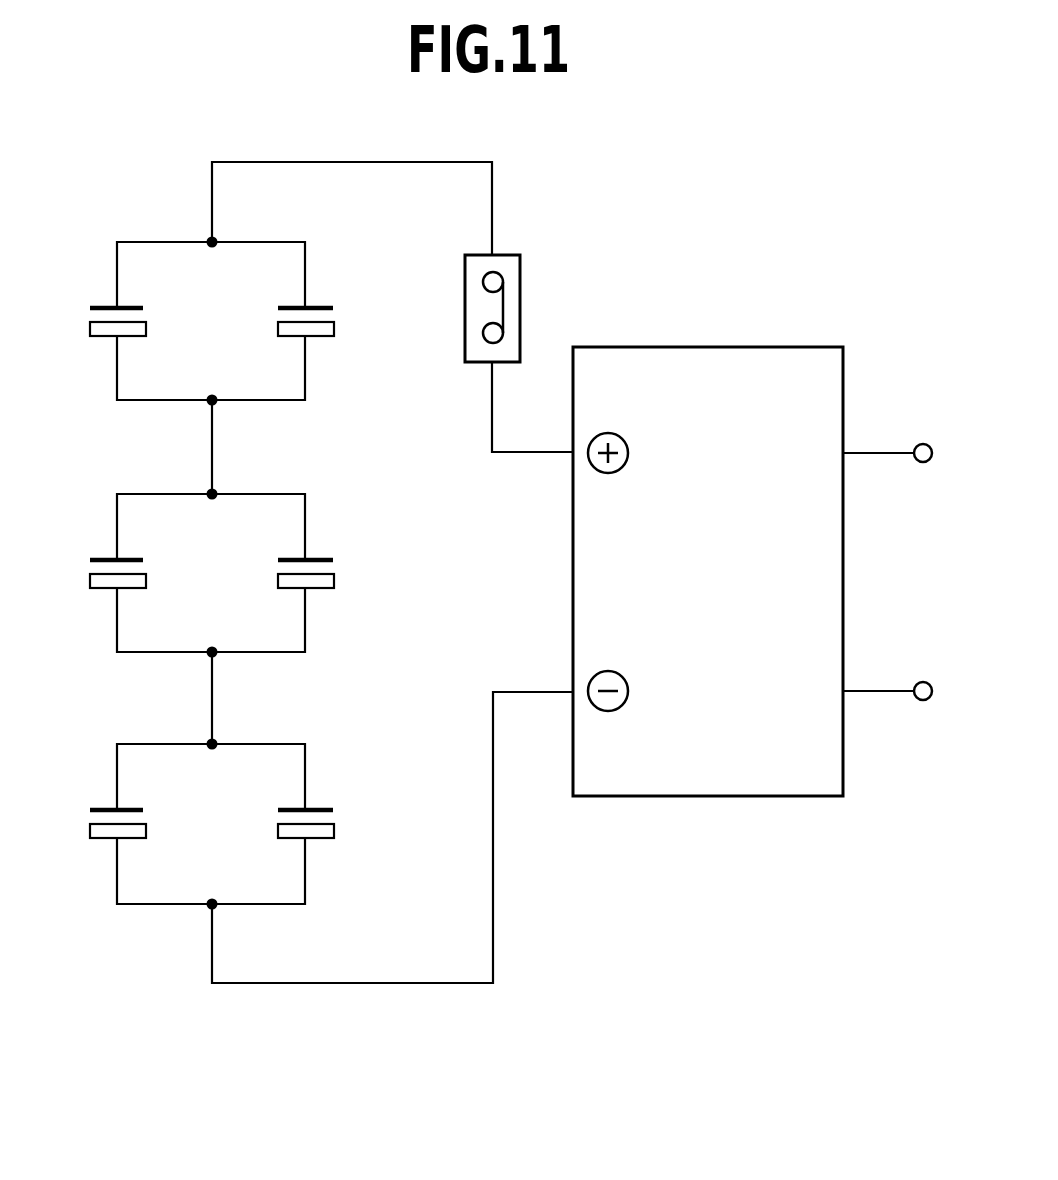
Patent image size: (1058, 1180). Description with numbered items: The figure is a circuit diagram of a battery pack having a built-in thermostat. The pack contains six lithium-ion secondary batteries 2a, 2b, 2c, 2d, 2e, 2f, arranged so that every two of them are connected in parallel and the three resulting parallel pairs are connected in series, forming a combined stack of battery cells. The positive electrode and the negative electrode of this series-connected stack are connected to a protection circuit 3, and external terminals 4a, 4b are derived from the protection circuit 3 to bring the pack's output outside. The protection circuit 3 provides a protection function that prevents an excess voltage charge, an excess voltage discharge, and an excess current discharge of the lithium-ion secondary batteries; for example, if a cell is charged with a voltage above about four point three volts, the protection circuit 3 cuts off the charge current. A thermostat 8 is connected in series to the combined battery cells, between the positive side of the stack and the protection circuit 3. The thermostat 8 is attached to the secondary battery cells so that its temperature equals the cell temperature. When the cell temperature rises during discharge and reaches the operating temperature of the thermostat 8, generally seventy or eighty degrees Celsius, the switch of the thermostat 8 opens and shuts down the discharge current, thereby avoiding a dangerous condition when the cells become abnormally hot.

The lithium-ion secondary battery 2a is at (103, 337).
The lithium-ion secondary battery 2b is at (323, 307).
The lithium-ion secondary battery 2c is at (103, 589).
The lithium-ion secondary battery 2d is at (323, 559).
The lithium-ion secondary battery 2e is at (103, 839).
The lithium-ion secondary battery 2f is at (323, 809).
The thermostat 8 is at (505, 254).
The protection circuit 3 is at (710, 346).
The external terminal 4a is at (923, 443).
The external terminal 4b is at (923, 701).